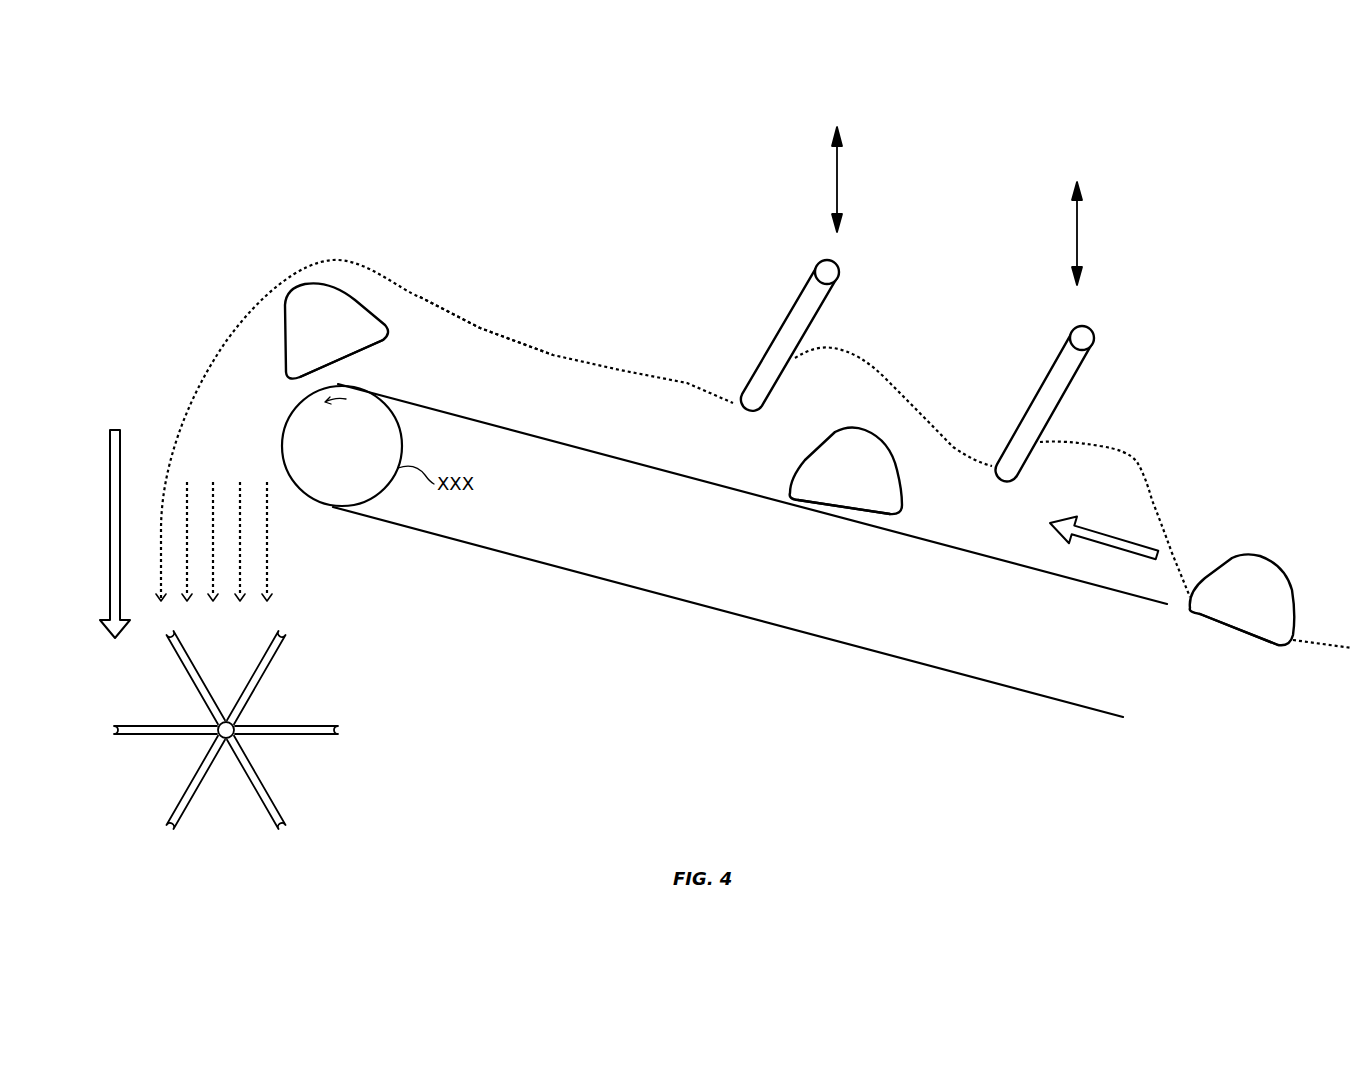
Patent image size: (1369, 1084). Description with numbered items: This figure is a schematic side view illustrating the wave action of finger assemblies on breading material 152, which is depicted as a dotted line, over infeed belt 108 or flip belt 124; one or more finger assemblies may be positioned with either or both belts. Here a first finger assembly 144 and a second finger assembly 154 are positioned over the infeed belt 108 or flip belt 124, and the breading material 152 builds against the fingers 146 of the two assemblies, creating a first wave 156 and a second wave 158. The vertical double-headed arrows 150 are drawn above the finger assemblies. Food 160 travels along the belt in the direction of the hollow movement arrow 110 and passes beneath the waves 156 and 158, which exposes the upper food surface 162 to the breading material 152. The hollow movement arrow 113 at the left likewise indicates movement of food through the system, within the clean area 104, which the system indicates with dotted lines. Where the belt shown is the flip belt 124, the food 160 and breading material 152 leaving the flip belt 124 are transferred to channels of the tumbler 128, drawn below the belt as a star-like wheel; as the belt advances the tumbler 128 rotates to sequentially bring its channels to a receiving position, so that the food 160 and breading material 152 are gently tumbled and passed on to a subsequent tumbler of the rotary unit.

The clean area 104 is at (162, 343).
The hollow movement arrow 113 is at (110, 565).
The tumbler 128 is at (343, 724).
The infeed belt 108 is at (750, 550).
The flip belt 124 is at (430, 530).
The upper food surface 162 is at (292, 300).
The food 160 is at (285, 367).
The fingers 146 is at (778, 321).
The second finger assembly 154 is at (836, 265).
The first finger assembly 144 is at (1093, 331).
The vertical movement direction 150 is at (1075, 238).
The second wave 158 is at (882, 343).
The first wave 156 is at (1142, 423).
The breading material 152 is at (482, 330).
The hollow movement arrow 110 is at (1086, 529).